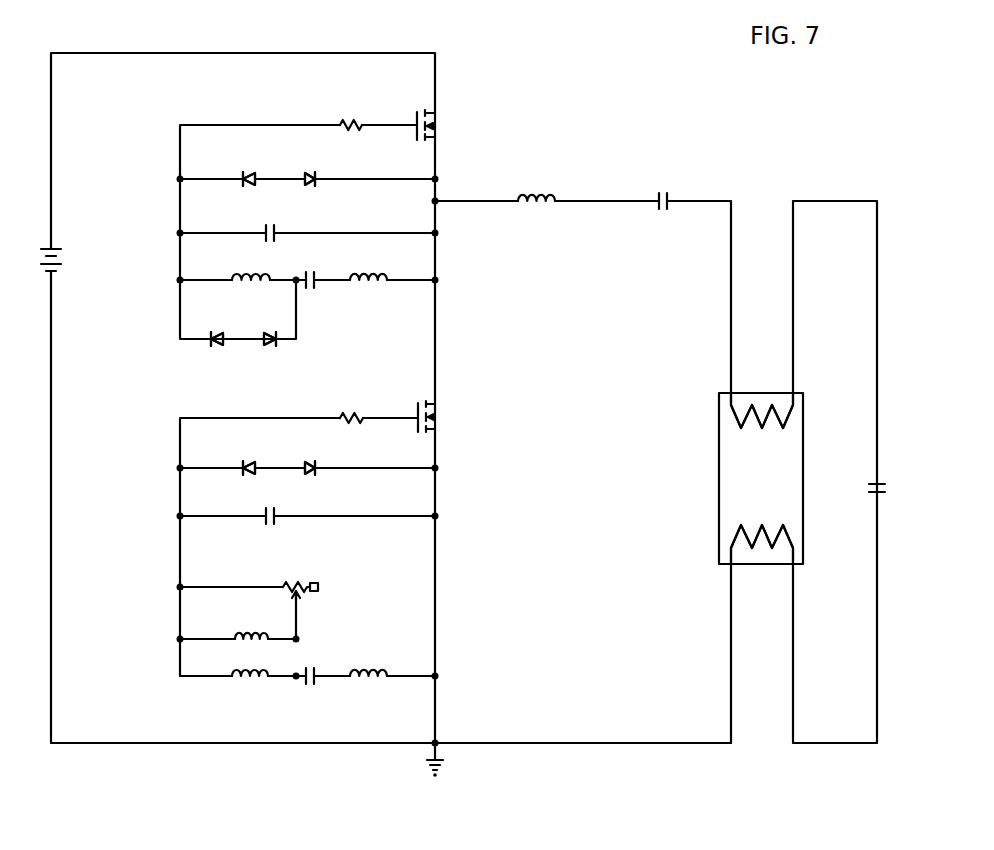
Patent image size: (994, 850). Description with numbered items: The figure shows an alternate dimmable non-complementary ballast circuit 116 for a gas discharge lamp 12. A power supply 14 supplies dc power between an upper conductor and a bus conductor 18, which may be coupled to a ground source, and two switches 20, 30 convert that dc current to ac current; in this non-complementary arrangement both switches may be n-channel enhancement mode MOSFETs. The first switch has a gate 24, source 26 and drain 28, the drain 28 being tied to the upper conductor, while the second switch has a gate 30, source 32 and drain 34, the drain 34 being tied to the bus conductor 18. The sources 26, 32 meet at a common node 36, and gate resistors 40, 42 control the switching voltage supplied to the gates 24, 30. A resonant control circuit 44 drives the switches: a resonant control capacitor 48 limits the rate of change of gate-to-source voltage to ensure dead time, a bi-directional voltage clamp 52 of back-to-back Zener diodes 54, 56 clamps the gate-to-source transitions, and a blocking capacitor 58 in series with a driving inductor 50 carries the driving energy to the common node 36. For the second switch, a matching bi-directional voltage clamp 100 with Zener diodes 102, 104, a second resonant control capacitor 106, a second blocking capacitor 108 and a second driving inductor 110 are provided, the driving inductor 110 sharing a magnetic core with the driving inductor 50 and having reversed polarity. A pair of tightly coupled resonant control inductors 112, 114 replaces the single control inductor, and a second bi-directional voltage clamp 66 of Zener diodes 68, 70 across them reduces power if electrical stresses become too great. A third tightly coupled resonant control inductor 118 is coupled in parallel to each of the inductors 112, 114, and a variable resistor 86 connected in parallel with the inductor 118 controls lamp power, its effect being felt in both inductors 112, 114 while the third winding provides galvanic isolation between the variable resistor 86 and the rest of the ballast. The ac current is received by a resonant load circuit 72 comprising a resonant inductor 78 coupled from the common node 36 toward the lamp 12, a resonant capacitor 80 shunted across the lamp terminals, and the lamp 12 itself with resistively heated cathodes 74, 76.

The gas discharge lamp 12 is at (776, 489).
The power supply 14 is at (58, 247).
The bus conductor 18 is at (245, 746).
The switch 20 is at (428, 108).
The gate 24 is at (378, 127).
The source 26 is at (437, 156).
The drain 28 is at (437, 100).
The gate 30 is at (390, 416).
The source 32 is at (437, 391).
The drain 34 is at (437, 443).
The common node 36 is at (437, 205).
The gate resistor 40 is at (340, 125).
The gate resistor 42 is at (340, 418).
The resonant control circuit 44 is at (170, 786).
The resonant control capacitor 48 is at (278, 237).
The driving inductor 50 is at (378, 272).
The bi-directional voltage clamp 52 is at (235, 170).
The Zener diode 54 is at (243, 183).
The Zener diode 56 is at (316, 182).
The blocking capacitor 58 is at (316, 285).
The bi-directional voltage clamp 66 is at (200, 352).
The Zener diode 68 is at (215, 334).
The Zener diode 70 is at (268, 333).
The resonant load circuit 72 is at (450, 757).
The cathode 74 is at (762, 428).
The cathode 76 is at (762, 525).
The resonant inductor 78 is at (540, 193).
The resonant capacitor 80 is at (875, 498).
The variable resistor 86 is at (305, 591).
The bi-directional voltage clamp 100 is at (235, 456).
The Zener diode 102 is at (248, 472).
The Zener diode 104 is at (320, 472).
The resonant control capacitor 106 is at (278, 520).
The blocking capacitor 108 is at (318, 680).
The driving inductor 110 is at (378, 672).
The resonant control inductor 112 is at (242, 272).
The resonant control inductor 114 is at (240, 672).
The ballast circuit 116 is at (614, 110).
The resonant control inductor 118 is at (235, 638).